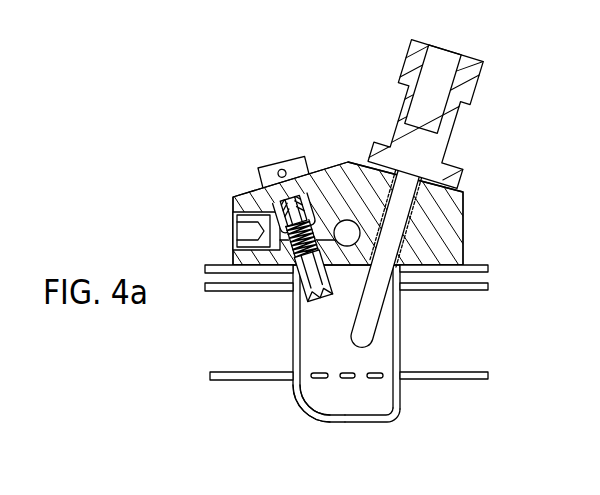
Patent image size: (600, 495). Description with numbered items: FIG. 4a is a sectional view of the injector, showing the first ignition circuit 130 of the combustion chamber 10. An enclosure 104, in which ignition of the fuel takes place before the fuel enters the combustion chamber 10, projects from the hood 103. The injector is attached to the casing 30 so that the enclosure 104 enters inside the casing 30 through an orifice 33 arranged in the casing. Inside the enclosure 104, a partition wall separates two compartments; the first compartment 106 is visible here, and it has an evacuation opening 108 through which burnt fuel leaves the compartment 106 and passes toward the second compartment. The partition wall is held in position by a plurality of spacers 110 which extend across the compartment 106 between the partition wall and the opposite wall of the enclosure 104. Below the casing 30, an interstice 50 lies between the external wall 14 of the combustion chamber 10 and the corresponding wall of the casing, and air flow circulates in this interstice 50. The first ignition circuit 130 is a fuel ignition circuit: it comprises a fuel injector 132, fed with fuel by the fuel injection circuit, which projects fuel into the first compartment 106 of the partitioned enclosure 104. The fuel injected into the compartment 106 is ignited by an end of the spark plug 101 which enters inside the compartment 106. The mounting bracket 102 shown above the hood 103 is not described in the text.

The spark plug 101 is at (412, 63).
The bracket 102 is at (272, 167).
The hood 103 is at (333, 168).
The casing 30 is at (483, 264).
The interstice 50 is at (452, 318).
The compartment 106 is at (378, 352).
The combustion chamber 10 is at (450, 418).
The external wall 14 is at (473, 379).
The spacers 110 is at (375, 379).
The evacuation opening 108 is at (328, 380).
The enclosure 104 is at (315, 418).
The first ignition circuit 130 is at (287, 350).
The orifice 33 is at (350, 289).
The fuel injector 132 is at (303, 287).